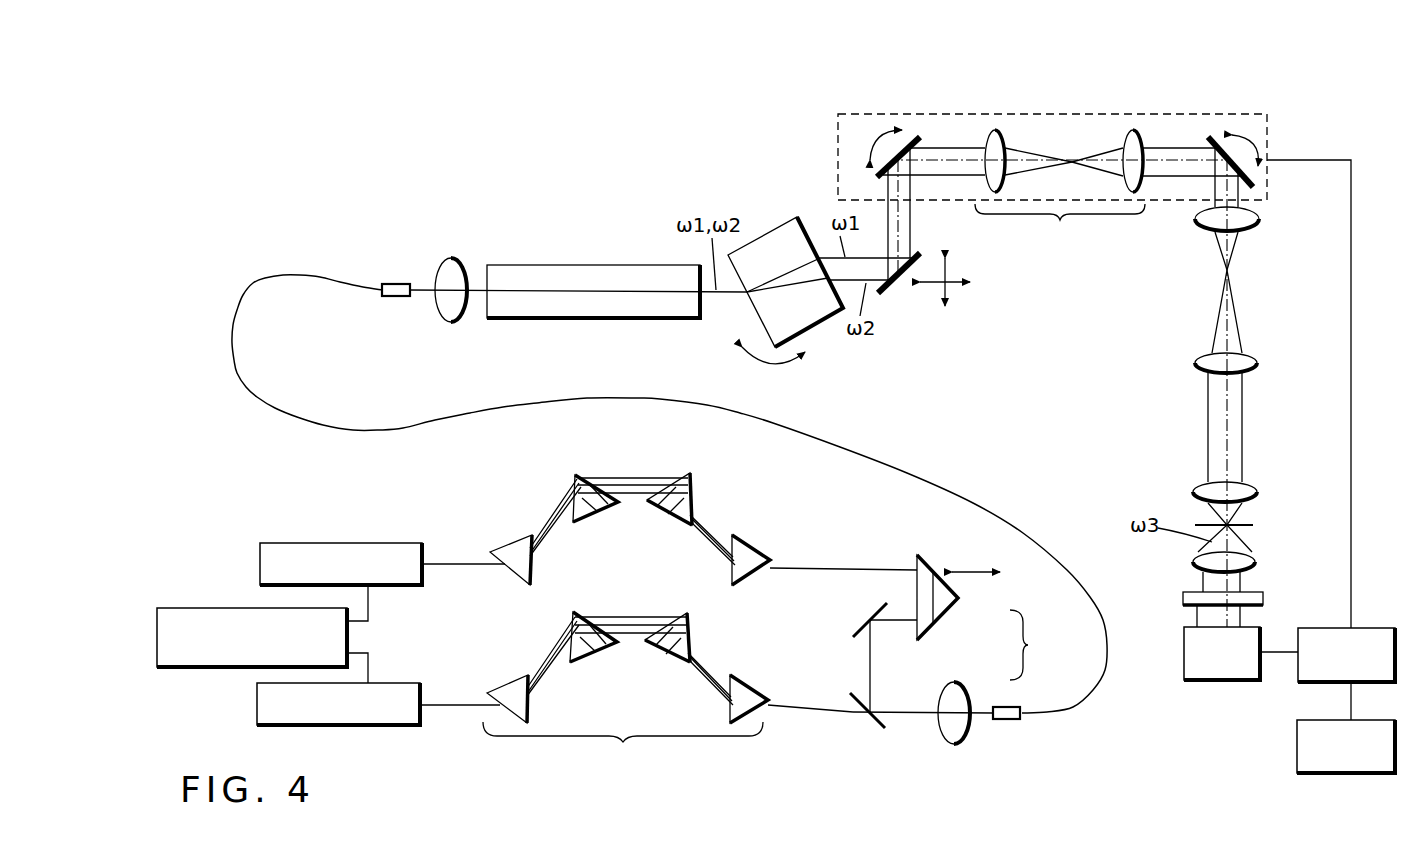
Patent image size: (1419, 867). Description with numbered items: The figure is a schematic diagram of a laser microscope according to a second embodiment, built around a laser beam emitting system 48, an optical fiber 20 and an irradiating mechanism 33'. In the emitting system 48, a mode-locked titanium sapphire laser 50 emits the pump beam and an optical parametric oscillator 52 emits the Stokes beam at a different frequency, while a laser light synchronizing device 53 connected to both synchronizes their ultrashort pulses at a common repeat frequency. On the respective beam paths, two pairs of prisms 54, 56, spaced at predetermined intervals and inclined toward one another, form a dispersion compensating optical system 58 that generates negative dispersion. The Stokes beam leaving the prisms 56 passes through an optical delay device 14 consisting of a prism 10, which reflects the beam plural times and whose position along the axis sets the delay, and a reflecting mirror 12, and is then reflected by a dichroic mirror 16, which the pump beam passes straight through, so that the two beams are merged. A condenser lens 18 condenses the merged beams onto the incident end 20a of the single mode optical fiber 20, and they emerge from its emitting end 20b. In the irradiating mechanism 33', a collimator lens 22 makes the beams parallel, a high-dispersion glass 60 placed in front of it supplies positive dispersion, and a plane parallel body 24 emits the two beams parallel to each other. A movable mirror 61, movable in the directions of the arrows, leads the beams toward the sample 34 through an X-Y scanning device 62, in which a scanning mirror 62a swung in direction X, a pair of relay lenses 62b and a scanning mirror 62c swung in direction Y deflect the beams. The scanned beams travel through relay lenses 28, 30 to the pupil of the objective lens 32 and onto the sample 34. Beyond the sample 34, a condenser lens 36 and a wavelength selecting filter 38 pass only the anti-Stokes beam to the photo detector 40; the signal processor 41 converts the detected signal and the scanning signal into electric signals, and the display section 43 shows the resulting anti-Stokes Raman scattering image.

The prism 10 is at (950, 612).
The reflecting mirror 12 is at (880, 622).
The optical delay device 14 is at (956, 633).
The dichroic mirror 16 is at (873, 732).
The condenser lens 18 is at (955, 746).
The optical fiber 20 is at (1082, 708).
The incident end 20a is at (1010, 721).
The emitting end 20b is at (393, 283).
The collimator lens 22 is at (452, 257).
The plane parallel body 24 is at (784, 222).
The relay lens 28 is at (1262, 222).
The relay lens 30 is at (1260, 363).
The objective lens 32 is at (1258, 490).
The irradiating mechanism 33' is at (1327, 102).
The sample 34 is at (1255, 525).
The condenser lens 36 is at (1193, 562).
The wavelength selecting filter 38 is at (1185, 597).
The photo detector 40 is at (1229, 681).
The signal processor 41 is at (1385, 627).
The display section 43 is at (1297, 747).
The laser beam emitting system 48 is at (690, 763).
The mode-locked titanium sapphire laser 50 is at (398, 726).
The optical parametric oscillator 52 is at (400, 586).
The laser light synchronizing device 53 is at (208, 668).
The prisms 54 is at (514, 685).
The prisms 56 is at (514, 545).
The dispersion compensating optical system 58 is at (623, 745).
The high-dispersion glass 60 is at (596, 265).
The movable mirror 61 is at (896, 292).
The X-Y scanning device 62 is at (1073, 113).
The scanning mirror 62a is at (915, 137).
The relay lenses 62b is at (1063, 190).
The scanning mirror 62c is at (1210, 140).